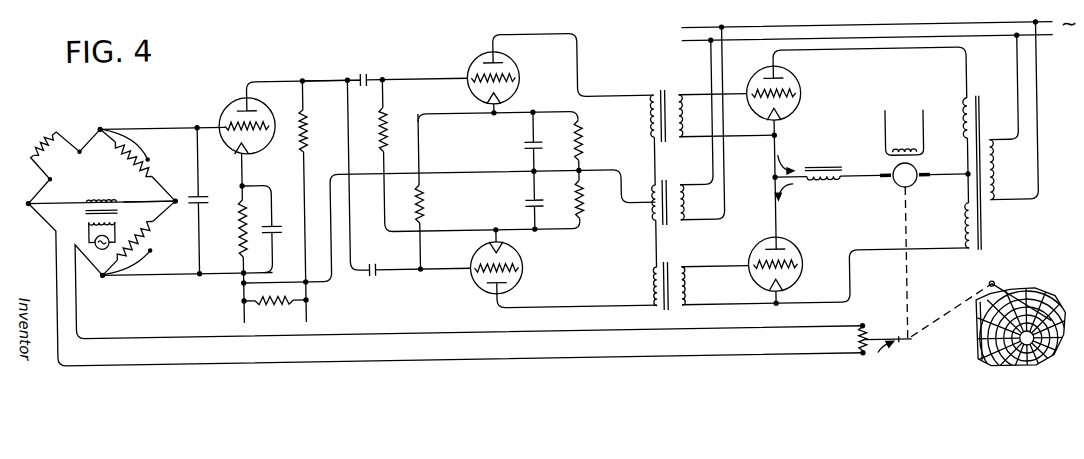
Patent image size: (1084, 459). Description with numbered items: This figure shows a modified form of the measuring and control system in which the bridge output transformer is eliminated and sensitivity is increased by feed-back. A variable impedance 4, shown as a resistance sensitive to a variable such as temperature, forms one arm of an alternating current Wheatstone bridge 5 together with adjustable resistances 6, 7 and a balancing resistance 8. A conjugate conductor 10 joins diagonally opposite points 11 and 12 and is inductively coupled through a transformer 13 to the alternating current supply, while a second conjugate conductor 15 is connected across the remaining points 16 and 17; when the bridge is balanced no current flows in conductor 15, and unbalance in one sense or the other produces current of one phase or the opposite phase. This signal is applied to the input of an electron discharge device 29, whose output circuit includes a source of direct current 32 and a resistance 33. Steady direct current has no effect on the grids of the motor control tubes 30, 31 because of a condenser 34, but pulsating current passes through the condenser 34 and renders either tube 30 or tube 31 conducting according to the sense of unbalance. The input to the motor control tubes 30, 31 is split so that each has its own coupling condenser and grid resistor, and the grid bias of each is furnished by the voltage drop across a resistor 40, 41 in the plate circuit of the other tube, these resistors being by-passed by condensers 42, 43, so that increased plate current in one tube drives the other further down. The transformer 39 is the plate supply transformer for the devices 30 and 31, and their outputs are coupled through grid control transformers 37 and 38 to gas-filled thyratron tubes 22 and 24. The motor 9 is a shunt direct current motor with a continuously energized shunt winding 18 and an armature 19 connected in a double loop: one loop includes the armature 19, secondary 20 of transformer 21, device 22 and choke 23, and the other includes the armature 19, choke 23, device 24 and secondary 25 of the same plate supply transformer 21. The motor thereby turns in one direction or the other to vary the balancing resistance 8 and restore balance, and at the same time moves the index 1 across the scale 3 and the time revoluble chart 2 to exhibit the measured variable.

The movable index 1 is at (993, 301).
The time revoluble chart 2 is at (972, 362).
The scale 3 is at (1040, 309).
The variable impedance 4 is at (62, 159).
The alternating current Wheatstone bridge 5 is at (90, 182).
The adjustable resistance 6 is at (147, 175).
The adjustable resistance 7 is at (151, 247).
The balancing resistance 8 is at (874, 339).
The motor 9 is at (868, 224).
The conjugate conductor 10 is at (147, 203).
The bridge point 11 is at (25, 204).
The bridge point 12 is at (172, 204).
The transformer 13 is at (86, 225).
The second conjugate conductor 15 is at (200, 230).
The bridge point 16 is at (98, 131).
The bridge point 17 is at (98, 277).
The direct current shunt winding 18 is at (904, 131).
The armature rotor 19 is at (910, 198).
The secondary of transformer 21 20 is at (958, 173).
The transformer 21 is at (1000, 198).
The electron discharge device 22 is at (797, 95).
The choke 23 is at (809, 162).
The electron discharge device 24 is at (796, 262).
The secondary of transformer 21 25 is at (952, 226).
The electron discharge device 29 is at (232, 112).
The motor control tube 30 is at (516, 74).
The motor control tube 31 is at (518, 276).
The source of direct current 32 is at (448, 249).
The resistance 33 is at (319, 200).
The condenser 34 is at (385, 68).
The grid control transformer 37 is at (712, 127).
The grid control transformer 38 is at (811, 272).
The plate supply transformer 39 is at (687, 147).
The resistor 40 is at (592, 150).
The resistor 41 is at (592, 201).
The condenser 42 is at (545, 142).
The condenser 43 is at (546, 201).